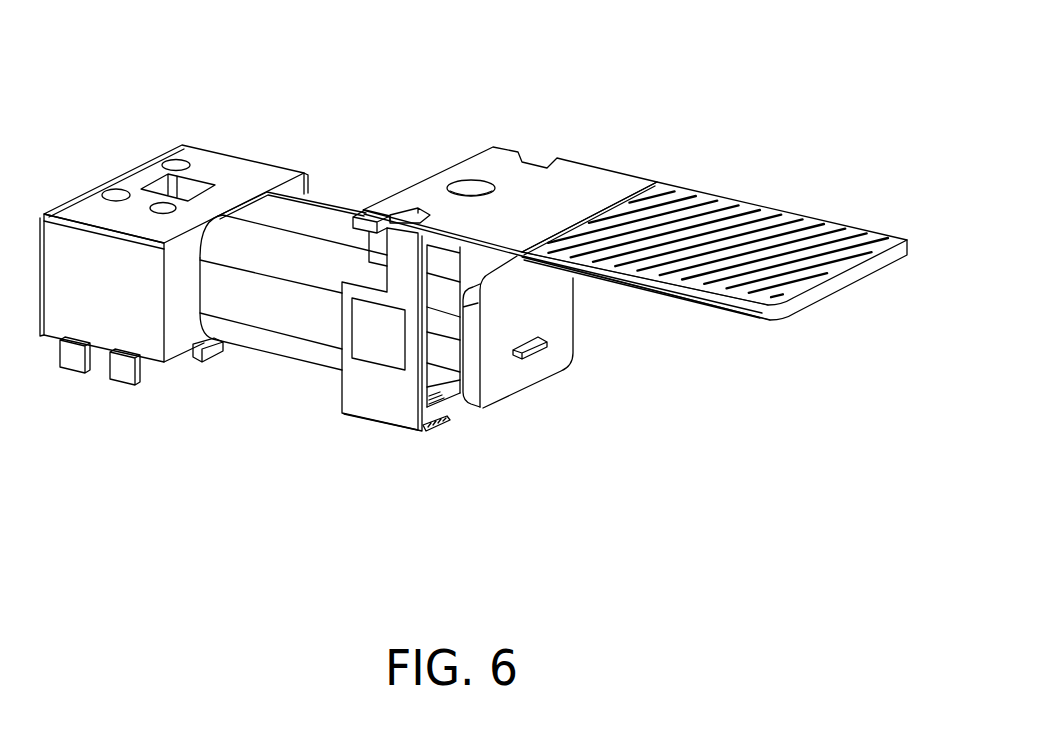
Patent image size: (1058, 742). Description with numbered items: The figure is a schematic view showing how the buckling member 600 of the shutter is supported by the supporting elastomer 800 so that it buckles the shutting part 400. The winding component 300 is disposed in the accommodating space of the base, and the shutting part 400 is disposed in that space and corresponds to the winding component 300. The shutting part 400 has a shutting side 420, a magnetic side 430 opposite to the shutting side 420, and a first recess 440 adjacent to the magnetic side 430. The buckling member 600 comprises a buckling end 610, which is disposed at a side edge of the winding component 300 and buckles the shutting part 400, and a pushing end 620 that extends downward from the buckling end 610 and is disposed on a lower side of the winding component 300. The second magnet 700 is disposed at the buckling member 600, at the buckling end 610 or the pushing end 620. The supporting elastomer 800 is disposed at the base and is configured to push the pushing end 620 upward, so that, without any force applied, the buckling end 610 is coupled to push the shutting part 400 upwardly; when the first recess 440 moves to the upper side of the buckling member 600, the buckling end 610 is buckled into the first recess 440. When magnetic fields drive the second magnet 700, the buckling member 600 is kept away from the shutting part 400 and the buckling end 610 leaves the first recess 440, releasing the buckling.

The winding component 300 is at (170, 126).
The shutting part 400 is at (599, 185).
The shutting side 420 is at (777, 237).
The magnetic side 430 is at (493, 167).
The first recess 440 is at (408, 213).
The buckling member 600 is at (410, 305).
The buckling end 610 is at (395, 233).
The pushing end 620 is at (460, 403).
The second magnet 700 is at (362, 332).
The supporting elastomer 800 is at (437, 440).